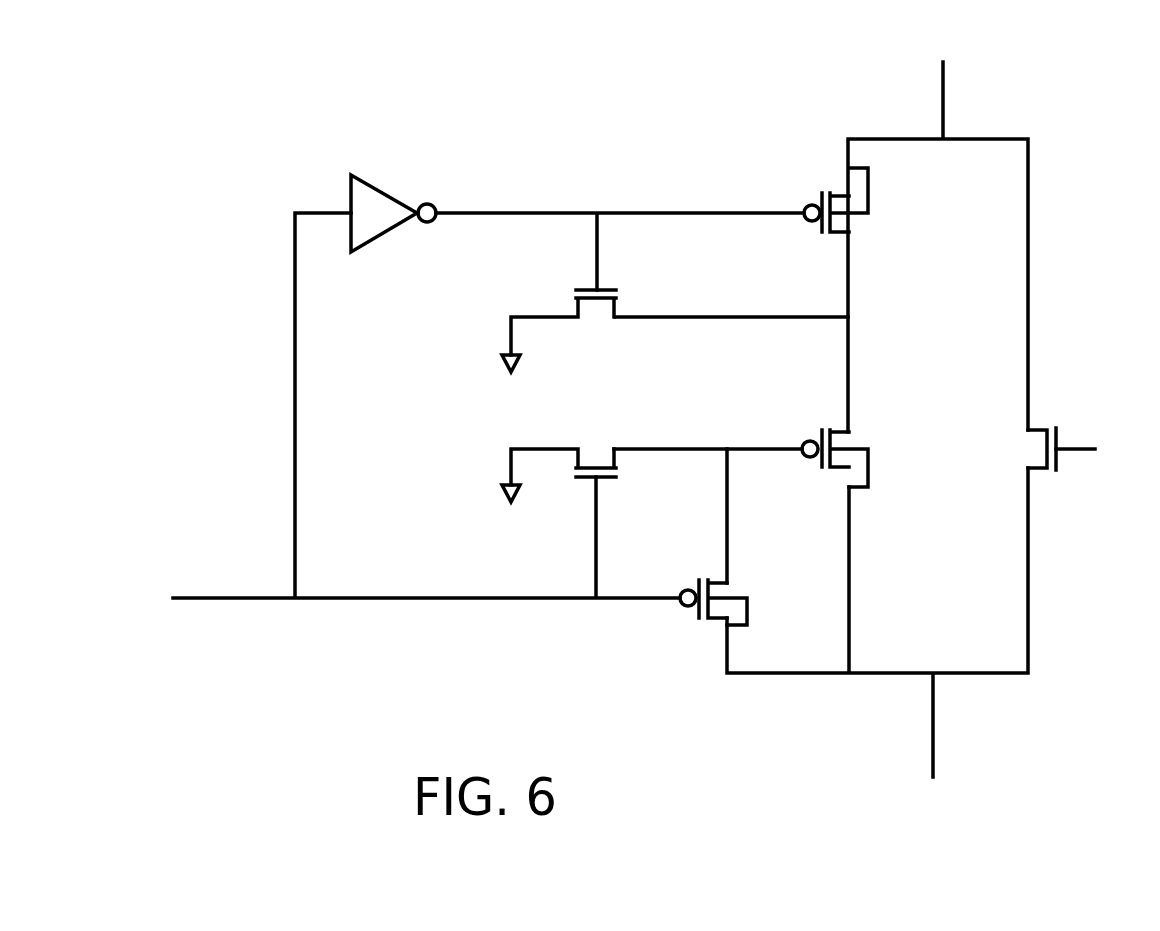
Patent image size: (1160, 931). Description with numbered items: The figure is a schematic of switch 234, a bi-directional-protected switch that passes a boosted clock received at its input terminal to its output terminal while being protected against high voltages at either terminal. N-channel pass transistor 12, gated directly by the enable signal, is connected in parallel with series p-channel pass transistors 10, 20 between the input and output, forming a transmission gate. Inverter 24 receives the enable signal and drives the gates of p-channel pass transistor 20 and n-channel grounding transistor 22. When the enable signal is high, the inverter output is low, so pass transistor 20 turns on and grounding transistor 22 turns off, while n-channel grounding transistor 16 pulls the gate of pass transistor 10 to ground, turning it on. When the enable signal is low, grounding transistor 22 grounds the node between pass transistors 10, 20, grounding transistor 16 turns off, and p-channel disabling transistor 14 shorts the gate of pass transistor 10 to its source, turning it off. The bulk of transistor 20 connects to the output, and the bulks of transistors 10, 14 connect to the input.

The switch 234 is at (662, 426).
The inverter 24 is at (384, 197).
The n-channel grounding transistor 22 is at (598, 300).
The p-channel pass transistor 20 is at (827, 233).
The p-channel pass transistor 10 is at (830, 468).
The n-channel grounding transistor 16 is at (582, 450).
The p-channel disabling transistor 14 is at (703, 620).
The n-channel pass transistor 12 is at (1045, 444).